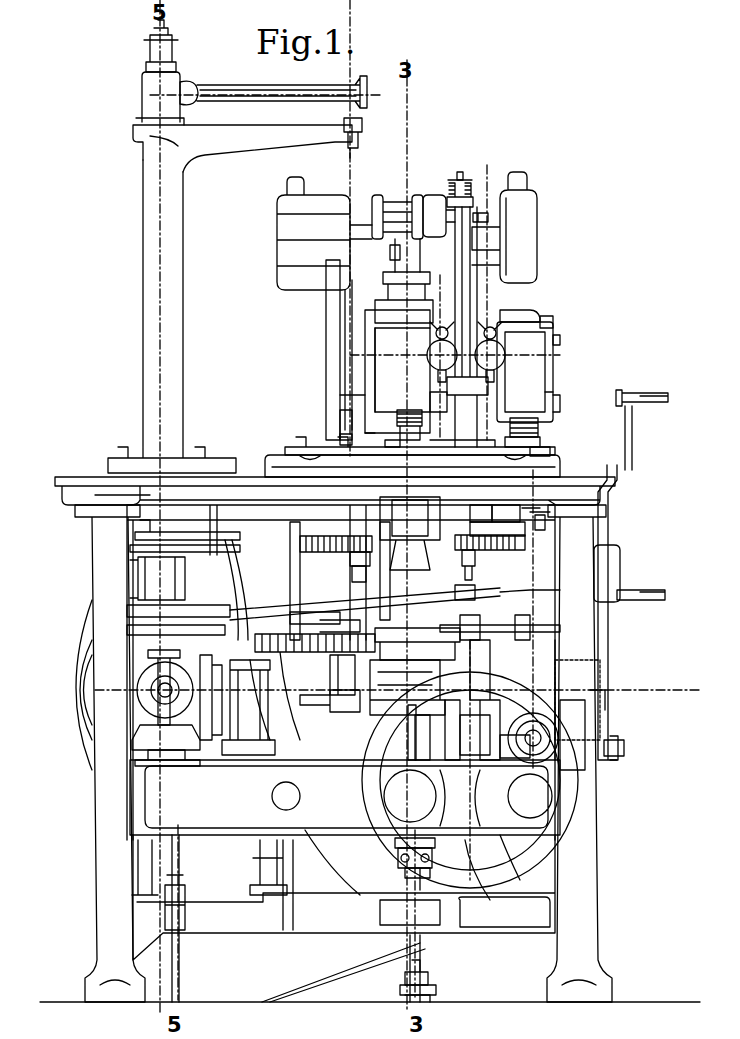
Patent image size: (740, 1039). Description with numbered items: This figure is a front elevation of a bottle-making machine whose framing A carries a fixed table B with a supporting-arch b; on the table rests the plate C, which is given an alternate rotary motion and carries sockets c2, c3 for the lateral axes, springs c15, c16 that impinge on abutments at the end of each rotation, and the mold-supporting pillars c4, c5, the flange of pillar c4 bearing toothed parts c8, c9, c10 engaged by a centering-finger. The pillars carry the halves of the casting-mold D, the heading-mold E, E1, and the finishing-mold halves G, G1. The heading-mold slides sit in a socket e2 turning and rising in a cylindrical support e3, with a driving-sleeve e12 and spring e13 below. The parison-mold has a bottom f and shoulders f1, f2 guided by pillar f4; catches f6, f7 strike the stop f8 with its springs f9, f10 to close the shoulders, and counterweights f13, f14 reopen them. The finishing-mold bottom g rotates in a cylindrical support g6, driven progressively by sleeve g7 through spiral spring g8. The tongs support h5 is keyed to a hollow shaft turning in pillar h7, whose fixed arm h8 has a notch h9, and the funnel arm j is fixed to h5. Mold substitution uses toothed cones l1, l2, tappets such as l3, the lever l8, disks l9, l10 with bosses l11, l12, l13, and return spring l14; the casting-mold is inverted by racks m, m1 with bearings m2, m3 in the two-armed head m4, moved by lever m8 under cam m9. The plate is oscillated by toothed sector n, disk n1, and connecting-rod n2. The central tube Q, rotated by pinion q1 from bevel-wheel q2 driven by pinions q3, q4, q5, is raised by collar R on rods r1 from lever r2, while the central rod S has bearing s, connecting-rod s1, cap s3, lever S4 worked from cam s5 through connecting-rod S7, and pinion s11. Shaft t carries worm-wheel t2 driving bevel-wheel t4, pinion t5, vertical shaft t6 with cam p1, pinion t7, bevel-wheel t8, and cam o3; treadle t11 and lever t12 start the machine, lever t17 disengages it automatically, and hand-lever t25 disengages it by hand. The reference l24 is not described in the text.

The framing A is at (618, 822).
The fixed table B is at (90, 480).
The plate C is at (280, 462).
The casting-mold D is at (398, 198).
The heading-mold half E is at (439, 234).
The heading-mold half E1 is at (393, 256).
The finishing-mold half G is at (324, 233).
The finishing-mold half G1 is at (504, 227).
The central tube Q is at (410, 748).
The collar R is at (433, 871).
The central rod S is at (424, 948).
The lever S4 is at (343, 972).
The connecting-rod S7 is at (185, 962).
The supporting-arch b is at (410, 533).
The socket c2 is at (350, 516).
The socket c3 is at (492, 528).
The mold-supporting pillar c4 is at (345, 360).
The mold-supporting pillar c5 is at (478, 300).
The toothed part c8 is at (300, 446).
The toothed part c9 is at (548, 455).
The toothed part c10 is at (370, 428).
The spring c15 is at (481, 499).
The spring c16 is at (516, 499).
The socket e2 is at (395, 302).
The cylindrical support e3 is at (365, 390).
The driving-sleeve e12 is at (420, 420).
The spring e13 is at (345, 418).
The bottom of parison-mold f is at (553, 370).
The shoulder f1 is at (553, 340).
The shoulder f2 is at (518, 326).
The guide pillar f4 is at (455, 298).
The catch f6 is at (426, 340).
The catch f7 is at (430, 338).
The stop f8 is at (484, 210).
The spring f9 is at (476, 182).
The spring f10 is at (450, 192).
The counterweight f13 is at (434, 352).
The counterweight f14 is at (503, 352).
The bottom of finishing-mold g is at (553, 328).
The cylindrical support g6 is at (553, 398).
The sleeve g7 is at (540, 440).
The spiral spring g8 is at (540, 424).
The support h5 is at (161, 67).
The pillar h7 is at (172, 272).
The fixed arm h8 is at (242, 147).
The notch h9 is at (364, 124).
The arm j is at (262, 88).
The toothed cone l1 is at (300, 540).
The toothed cone l2 is at (540, 526).
The tappet l3 is at (310, 705).
The lever l8 is at (450, 714).
The disk l9 is at (480, 666).
The disk l10 is at (356, 708).
The boss l11 is at (465, 735).
The boss l12 is at (330, 690).
The boss l13 is at (417, 650).
The spring l14 is at (407, 682).
The handle l24 is at (607, 573).
The rack m is at (478, 556).
The rack m1 is at (343, 554).
The bearing m2 is at (470, 582).
The bearing m3 is at (360, 578).
The two-armed head m4 is at (460, 596).
The lever m8 is at (300, 600).
The cam m9 is at (165, 616).
The toothed sector n is at (312, 676).
The disk n1 is at (520, 624).
The connecting-rod n2 is at (470, 625).
The cam o3 is at (76, 692).
The cam p1 is at (185, 560).
The pinion q1 is at (430, 737).
The bevel-wheel q2 is at (505, 875).
The pinion q3 is at (390, 790).
The pinion q4 is at (483, 863).
The pinion q5 is at (500, 748).
The small rod r1 is at (405, 867).
The lever r2 is at (405, 845).
The bearing s is at (408, 1000).
The small connecting-rod s1 is at (406, 985).
The cap s3 is at (432, 978).
The cam s5 is at (82, 752).
The pinion s11 is at (380, 908).
The horizontal shaft t is at (470, 780).
The worm-wheel t2 is at (600, 660).
The bevel-wheel t4 is at (171, 750).
The pinion t5 is at (157, 687).
The vertical shaft t6 is at (206, 694).
The pinion t7 is at (140, 748).
The bevel-wheel t8 is at (140, 692).
The treadle t11 is at (666, 598).
The lever t12 is at (622, 748).
The lever t17 is at (577, 700).
The hand-lever t25 is at (650, 392).